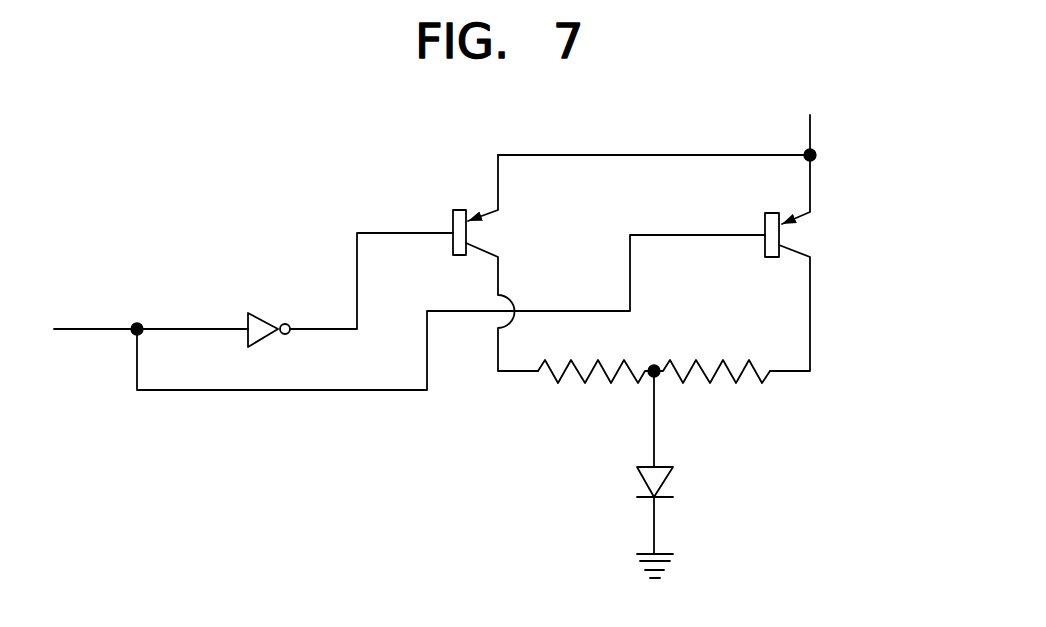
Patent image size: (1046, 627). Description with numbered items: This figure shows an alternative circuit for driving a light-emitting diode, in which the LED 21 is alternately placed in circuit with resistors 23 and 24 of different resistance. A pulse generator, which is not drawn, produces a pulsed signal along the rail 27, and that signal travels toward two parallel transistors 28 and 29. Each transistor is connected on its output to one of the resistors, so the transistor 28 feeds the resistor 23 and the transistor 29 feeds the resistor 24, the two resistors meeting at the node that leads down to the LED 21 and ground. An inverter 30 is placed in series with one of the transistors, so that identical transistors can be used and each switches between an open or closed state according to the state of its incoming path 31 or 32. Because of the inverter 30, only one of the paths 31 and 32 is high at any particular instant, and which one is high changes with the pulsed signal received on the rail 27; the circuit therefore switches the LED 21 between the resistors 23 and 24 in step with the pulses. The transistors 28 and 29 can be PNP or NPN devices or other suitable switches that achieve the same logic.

The LED 21 is at (699, 482).
The resistor 23 is at (583, 405).
The resistor 24 is at (727, 407).
The rail 27 is at (86, 330).
The transistor 28 is at (450, 217).
The transistor 29 is at (795, 235).
The inverter 30 is at (268, 316).
The incoming path 31 is at (370, 232).
The incoming path 32 is at (697, 233).